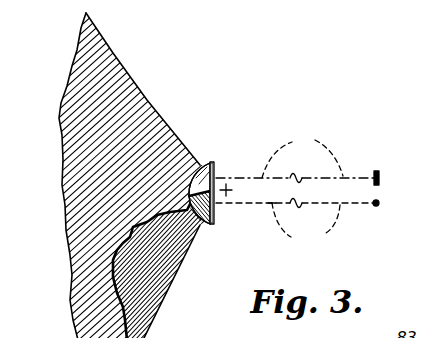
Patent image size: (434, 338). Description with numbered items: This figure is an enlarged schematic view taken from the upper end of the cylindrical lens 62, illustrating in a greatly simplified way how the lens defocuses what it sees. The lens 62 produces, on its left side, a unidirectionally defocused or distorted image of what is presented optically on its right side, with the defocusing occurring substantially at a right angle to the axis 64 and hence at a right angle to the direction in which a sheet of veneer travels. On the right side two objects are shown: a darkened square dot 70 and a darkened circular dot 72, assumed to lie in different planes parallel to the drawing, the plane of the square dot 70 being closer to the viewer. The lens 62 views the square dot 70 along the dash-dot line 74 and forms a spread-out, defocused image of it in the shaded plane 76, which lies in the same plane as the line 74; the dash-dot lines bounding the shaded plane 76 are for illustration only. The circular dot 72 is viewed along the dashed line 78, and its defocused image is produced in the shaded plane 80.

The lens 62 is at (206, 160).
The axis 64 is at (229, 193).
The darkened square dot 70 is at (380, 178).
The darkened circular dot 72 is at (379, 204).
The dash-dot line 74 is at (302, 151).
The shaded plane 76 is at (127, 107).
The dashed line 78 is at (304, 228).
The shaded plane 80 is at (147, 287).